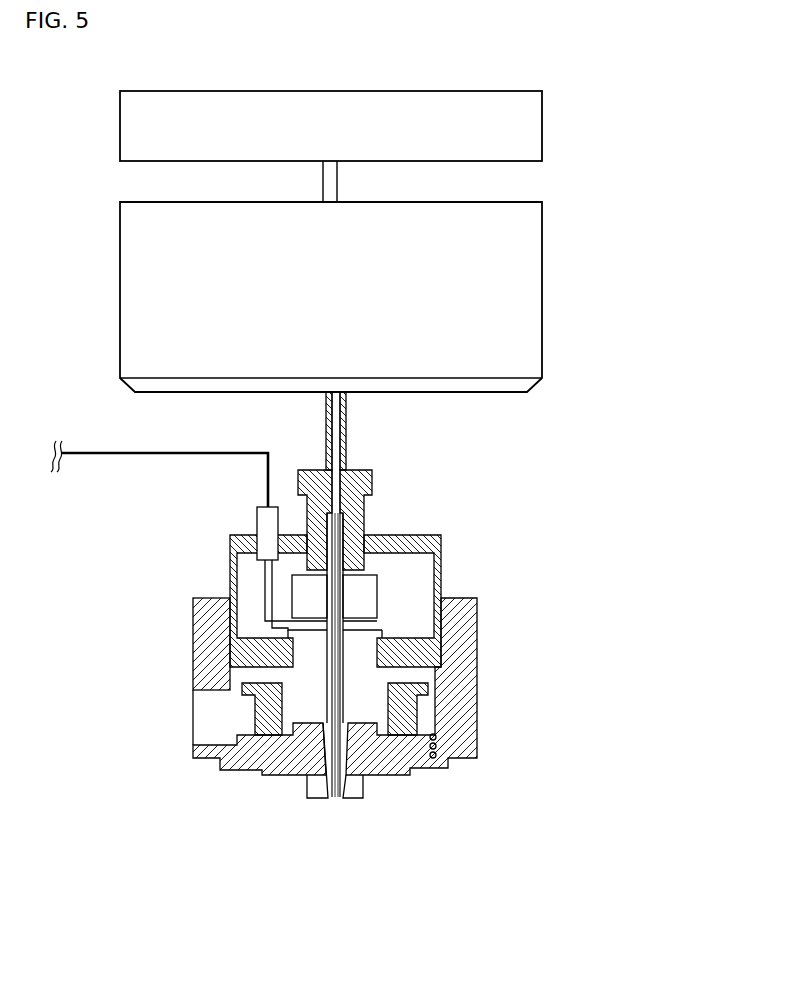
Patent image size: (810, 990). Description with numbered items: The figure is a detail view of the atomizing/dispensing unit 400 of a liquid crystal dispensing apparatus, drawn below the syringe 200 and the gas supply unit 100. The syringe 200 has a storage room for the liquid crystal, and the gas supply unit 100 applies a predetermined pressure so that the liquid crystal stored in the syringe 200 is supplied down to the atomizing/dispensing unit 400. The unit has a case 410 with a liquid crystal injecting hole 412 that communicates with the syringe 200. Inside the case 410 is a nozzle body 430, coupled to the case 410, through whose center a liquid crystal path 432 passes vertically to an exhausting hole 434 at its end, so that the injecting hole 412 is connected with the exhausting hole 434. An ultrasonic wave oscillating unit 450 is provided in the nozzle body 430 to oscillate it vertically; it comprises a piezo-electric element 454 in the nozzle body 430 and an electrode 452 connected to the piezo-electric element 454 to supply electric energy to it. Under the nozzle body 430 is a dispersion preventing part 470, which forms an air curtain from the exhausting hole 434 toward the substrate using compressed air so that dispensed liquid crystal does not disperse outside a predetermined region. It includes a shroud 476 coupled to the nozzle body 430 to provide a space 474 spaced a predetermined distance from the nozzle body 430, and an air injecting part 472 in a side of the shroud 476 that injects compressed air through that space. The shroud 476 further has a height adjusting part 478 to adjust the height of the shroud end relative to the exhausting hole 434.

The gas supply unit 100 is at (533, 128).
The syringe 200 is at (533, 292).
The atomizing/dispensing unit 400 is at (505, 587).
The case 410 is at (400, 543).
The liquid crystal injecting hole 412 is at (337, 415).
The nozzle body 430 is at (372, 594).
The liquid crystal path 432 is at (335, 678).
The exhausting hole 434 is at (333, 797).
The ultrasonic wave oscillating unit 450 is at (210, 542).
The electrode 452 is at (257, 522).
The piezo-electric element 454 is at (263, 631).
The dispersion preventing part 470 is at (301, 766).
The air injecting part 472 is at (198, 738).
The space 474 is at (313, 799).
The shroud 476 is at (245, 768).
The height adjusting part 478 is at (433, 757).